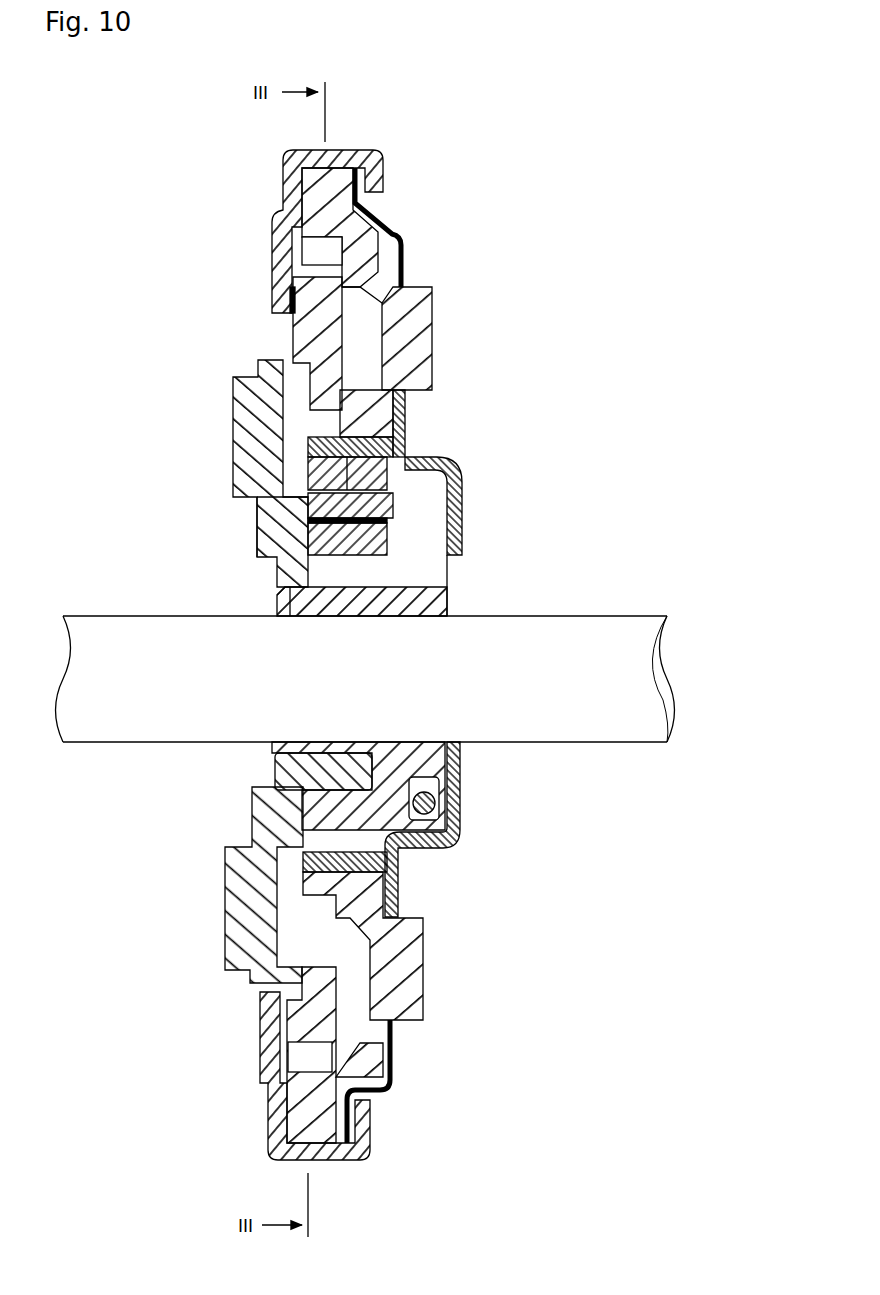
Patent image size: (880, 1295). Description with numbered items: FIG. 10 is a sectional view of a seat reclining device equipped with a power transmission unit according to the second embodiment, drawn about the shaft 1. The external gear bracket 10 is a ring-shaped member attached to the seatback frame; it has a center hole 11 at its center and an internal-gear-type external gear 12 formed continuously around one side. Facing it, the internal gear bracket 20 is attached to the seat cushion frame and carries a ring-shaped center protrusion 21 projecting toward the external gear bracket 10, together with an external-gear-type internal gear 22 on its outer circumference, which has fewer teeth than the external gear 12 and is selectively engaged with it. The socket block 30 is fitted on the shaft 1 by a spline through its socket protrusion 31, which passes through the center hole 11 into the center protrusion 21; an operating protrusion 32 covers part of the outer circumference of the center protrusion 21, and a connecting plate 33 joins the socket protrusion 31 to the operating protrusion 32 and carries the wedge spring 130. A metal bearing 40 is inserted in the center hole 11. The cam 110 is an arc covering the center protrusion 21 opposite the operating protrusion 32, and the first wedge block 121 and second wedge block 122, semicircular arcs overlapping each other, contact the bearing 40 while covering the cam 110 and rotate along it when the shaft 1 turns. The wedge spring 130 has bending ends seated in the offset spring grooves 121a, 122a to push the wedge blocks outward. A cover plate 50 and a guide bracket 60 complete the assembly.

The shaft 1 is at (636, 616).
The external gear bracket 10 is at (433, 333).
The center hole 11 is at (398, 866).
The external gear 12 is at (312, 249).
The internal gear bracket 20 is at (233, 430).
The ring-shaped center protrusion 21 is at (317, 742).
The internal gear 22 is at (293, 300).
The socket block 30 is at (398, 576).
The socket protrusion 31 is at (275, 598).
The operating protrusion 32 is at (310, 812).
The connecting plate 33 is at (447, 595).
The bearing 40 is at (405, 410).
The cover plate 50 is at (460, 475).
The guide bracket 60 is at (282, 177).
The cam 110 is at (300, 538).
The first wedge block 121 is at (318, 474).
The spring groove 121a is at (277, 510).
The second wedge block 122 is at (413, 457).
The spring groove 122a is at (413, 503).
The wedge spring 130 is at (433, 518).